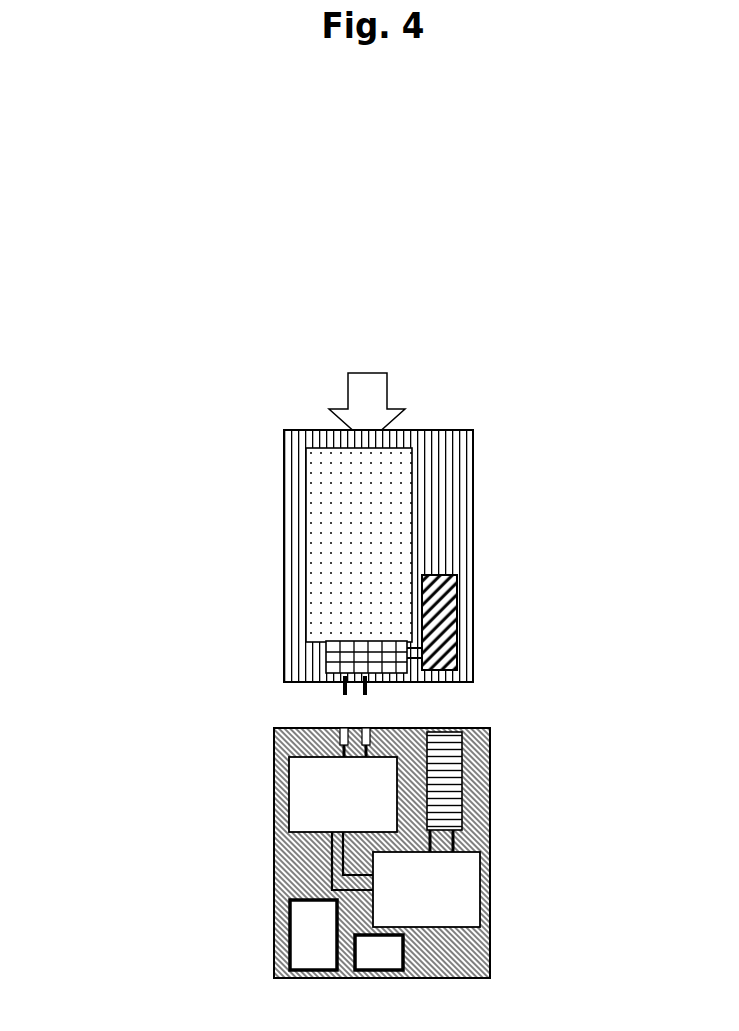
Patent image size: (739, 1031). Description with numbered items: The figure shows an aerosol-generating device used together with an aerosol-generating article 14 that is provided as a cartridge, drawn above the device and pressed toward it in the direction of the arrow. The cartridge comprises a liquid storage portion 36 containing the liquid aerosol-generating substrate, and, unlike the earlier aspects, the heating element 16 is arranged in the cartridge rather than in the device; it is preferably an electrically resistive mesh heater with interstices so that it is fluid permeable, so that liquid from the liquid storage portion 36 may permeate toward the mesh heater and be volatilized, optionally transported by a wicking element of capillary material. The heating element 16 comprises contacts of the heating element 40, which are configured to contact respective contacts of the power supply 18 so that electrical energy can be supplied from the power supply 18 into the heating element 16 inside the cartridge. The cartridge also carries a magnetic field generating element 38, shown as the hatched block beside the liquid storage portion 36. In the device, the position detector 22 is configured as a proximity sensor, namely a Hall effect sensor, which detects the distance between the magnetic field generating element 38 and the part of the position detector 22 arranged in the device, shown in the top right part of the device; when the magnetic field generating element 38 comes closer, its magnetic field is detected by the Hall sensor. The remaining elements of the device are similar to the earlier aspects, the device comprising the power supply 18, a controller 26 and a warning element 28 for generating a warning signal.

The aerosol-generating article 14 is at (447, 467).
The liquid storage portion 36 is at (377, 525).
The magnetic field generating element 38 is at (457, 603).
The heating element 16 is at (338, 653).
The contacts of the heating element 40 is at (342, 697).
The power supply 18 is at (343, 788).
The position detector 22 is at (583, 830).
The controller 26 is at (313, 935).
The warning element 28 is at (379, 952).